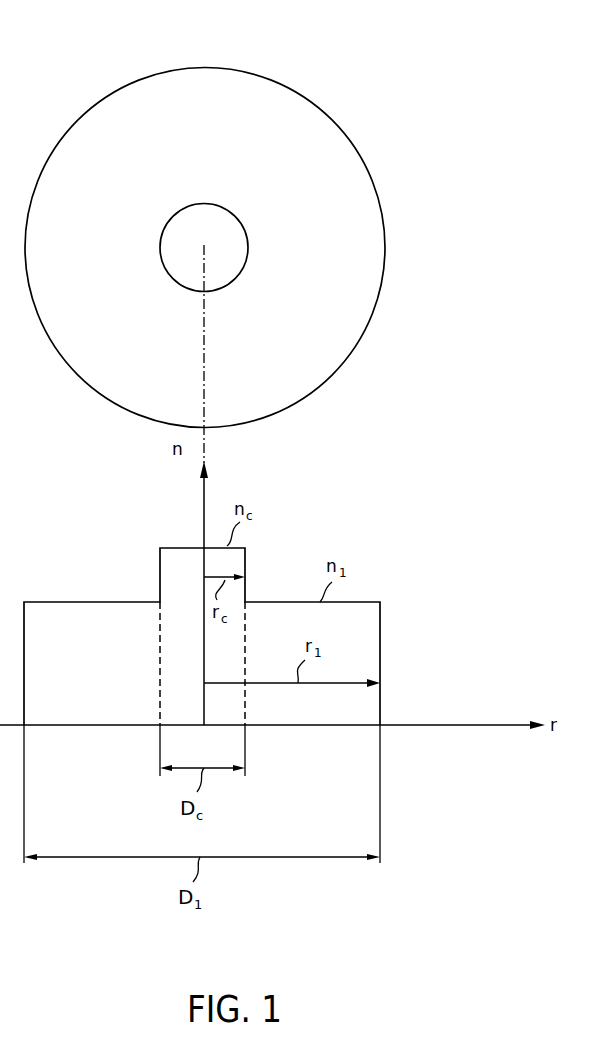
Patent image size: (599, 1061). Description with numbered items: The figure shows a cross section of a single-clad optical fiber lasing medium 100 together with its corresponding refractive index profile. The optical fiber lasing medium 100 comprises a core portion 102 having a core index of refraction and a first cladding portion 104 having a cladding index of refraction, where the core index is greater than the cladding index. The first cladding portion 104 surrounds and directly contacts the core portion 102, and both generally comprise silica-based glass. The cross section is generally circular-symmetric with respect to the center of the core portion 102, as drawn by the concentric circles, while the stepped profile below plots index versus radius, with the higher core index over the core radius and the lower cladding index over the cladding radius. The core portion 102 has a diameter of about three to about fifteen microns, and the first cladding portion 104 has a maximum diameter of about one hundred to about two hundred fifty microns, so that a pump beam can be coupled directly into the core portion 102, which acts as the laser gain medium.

The optical fiber lasing medium 100 is at (240, 221).
The core portion 102 is at (205, 203).
The first cladding portion 104 is at (375, 185).